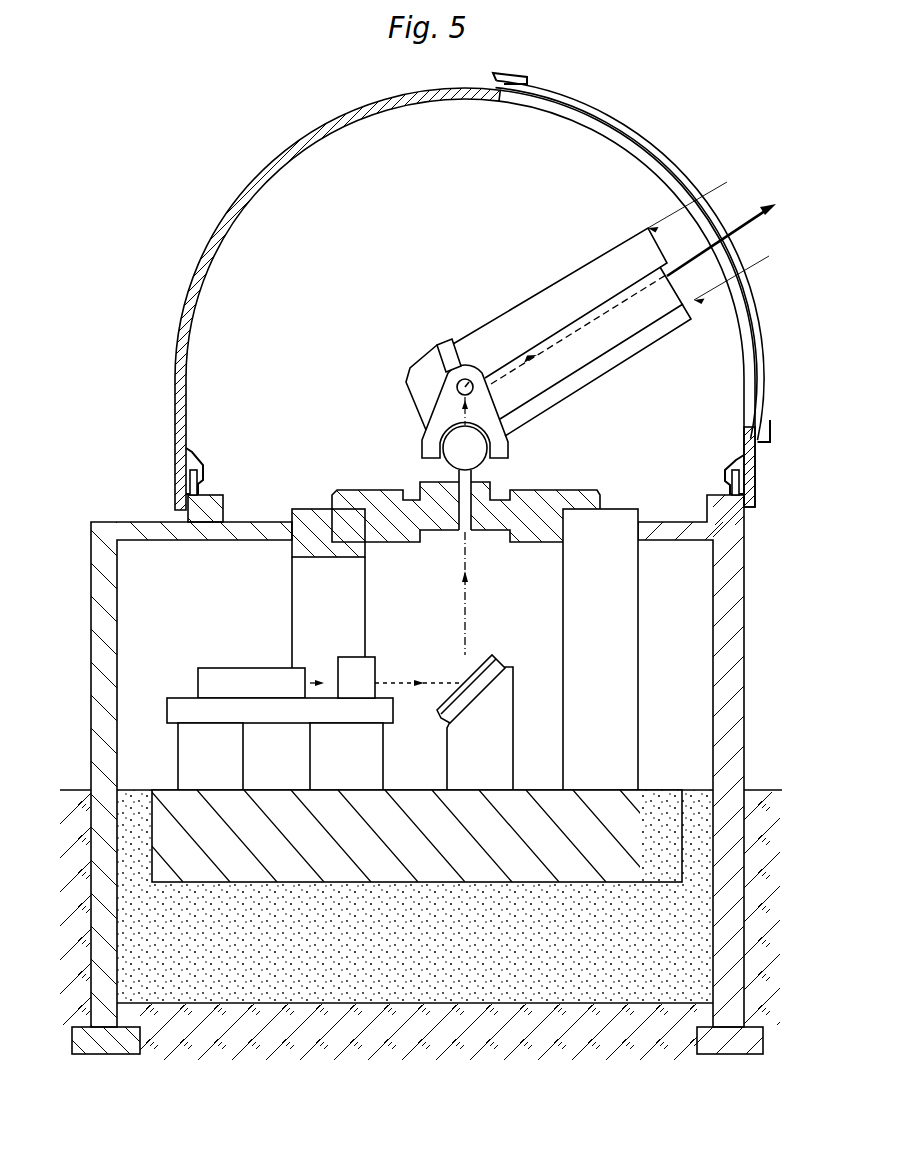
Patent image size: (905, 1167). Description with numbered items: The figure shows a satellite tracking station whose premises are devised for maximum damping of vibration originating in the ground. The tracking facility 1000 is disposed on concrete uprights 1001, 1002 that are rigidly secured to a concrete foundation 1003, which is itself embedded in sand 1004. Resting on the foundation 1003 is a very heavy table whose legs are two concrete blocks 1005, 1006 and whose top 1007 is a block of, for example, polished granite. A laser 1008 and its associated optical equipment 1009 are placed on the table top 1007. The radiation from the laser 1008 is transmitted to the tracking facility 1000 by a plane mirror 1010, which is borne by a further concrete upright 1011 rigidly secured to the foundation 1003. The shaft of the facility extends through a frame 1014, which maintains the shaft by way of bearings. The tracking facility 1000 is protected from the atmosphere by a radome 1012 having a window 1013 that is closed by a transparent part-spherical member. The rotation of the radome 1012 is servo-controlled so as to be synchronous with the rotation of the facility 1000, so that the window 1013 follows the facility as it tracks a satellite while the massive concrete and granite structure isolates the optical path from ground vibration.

The tracking facility 1000 is at (558, 288).
The concrete upright 1001 is at (639, 710).
The concrete upright 1002 is at (366, 553).
The concrete foundation 1003 is at (378, 836).
The sand 1004 is at (415, 896).
The concrete block 1005 is at (210, 756).
The concrete block 1006 is at (346, 756).
The table top 1007 is at (280, 710).
The laser 1008 is at (251, 684).
The optical equipment 1009 is at (378, 648).
The plane mirror 1010 is at (488, 660).
The concrete upright 1011 is at (511, 738).
The radome 1012 is at (183, 330).
The window 1013 is at (635, 150).
The frame 1014 is at (507, 488).